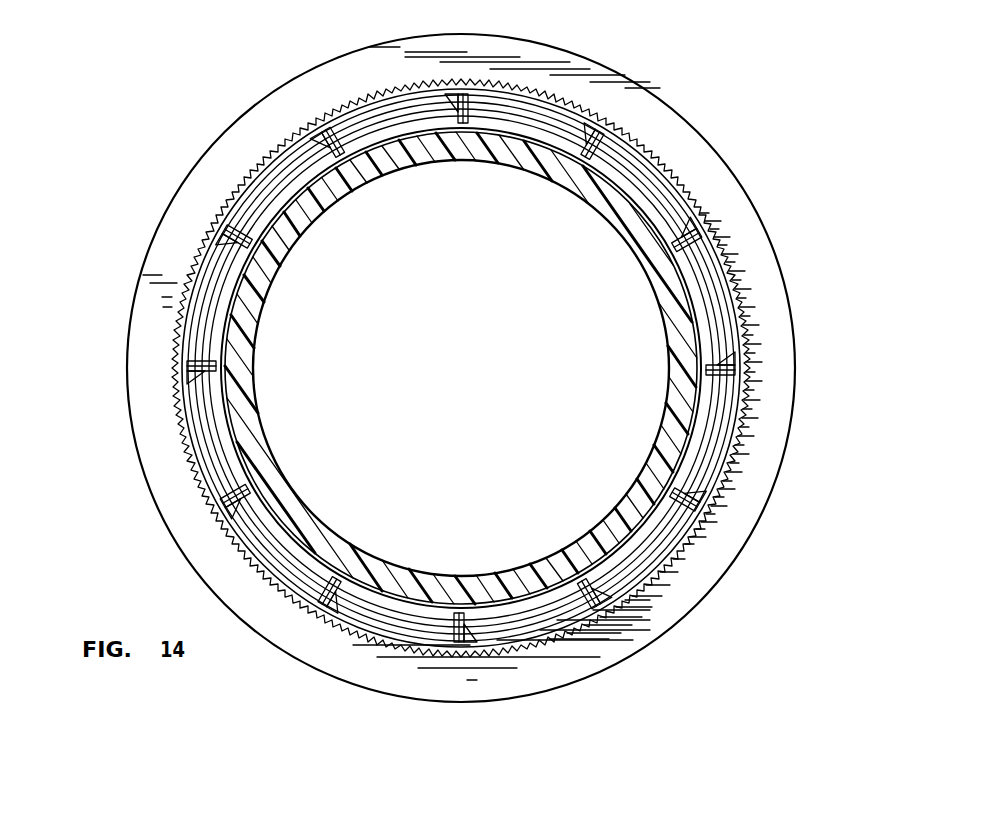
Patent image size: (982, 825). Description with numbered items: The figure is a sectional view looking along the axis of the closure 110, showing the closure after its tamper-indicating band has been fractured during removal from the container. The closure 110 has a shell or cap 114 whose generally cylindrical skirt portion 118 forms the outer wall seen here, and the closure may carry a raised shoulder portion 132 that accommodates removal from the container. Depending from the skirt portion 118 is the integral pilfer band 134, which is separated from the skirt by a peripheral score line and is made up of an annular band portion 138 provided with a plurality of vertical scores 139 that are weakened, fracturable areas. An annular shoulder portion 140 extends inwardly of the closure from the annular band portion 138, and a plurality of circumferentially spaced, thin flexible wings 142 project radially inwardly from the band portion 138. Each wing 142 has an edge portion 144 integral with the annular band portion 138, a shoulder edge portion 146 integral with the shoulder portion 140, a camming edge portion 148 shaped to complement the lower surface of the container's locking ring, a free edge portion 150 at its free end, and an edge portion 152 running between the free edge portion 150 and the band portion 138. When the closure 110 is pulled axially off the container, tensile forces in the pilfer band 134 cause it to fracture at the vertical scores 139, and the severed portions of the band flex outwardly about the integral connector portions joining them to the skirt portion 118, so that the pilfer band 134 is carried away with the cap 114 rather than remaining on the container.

The closure 110 is at (697, 97).
The cap 114 is at (232, 174).
The skirt portion 118 is at (730, 264).
The raised shoulder portion 132 is at (722, 178).
The pilfer band 134 is at (727, 481).
The annular band portion 138 is at (765, 409).
The vertical scores 139 is at (720, 502).
The annular shoulder portion 140 is at (730, 404).
The wings 142 is at (365, 148).
The edge portion 144 is at (193, 380).
The shoulder edge portion 146 is at (208, 372).
The camming edge portion 148 is at (267, 292).
The free edge portion 150 is at (275, 267).
The edge portion 152 is at (260, 233).